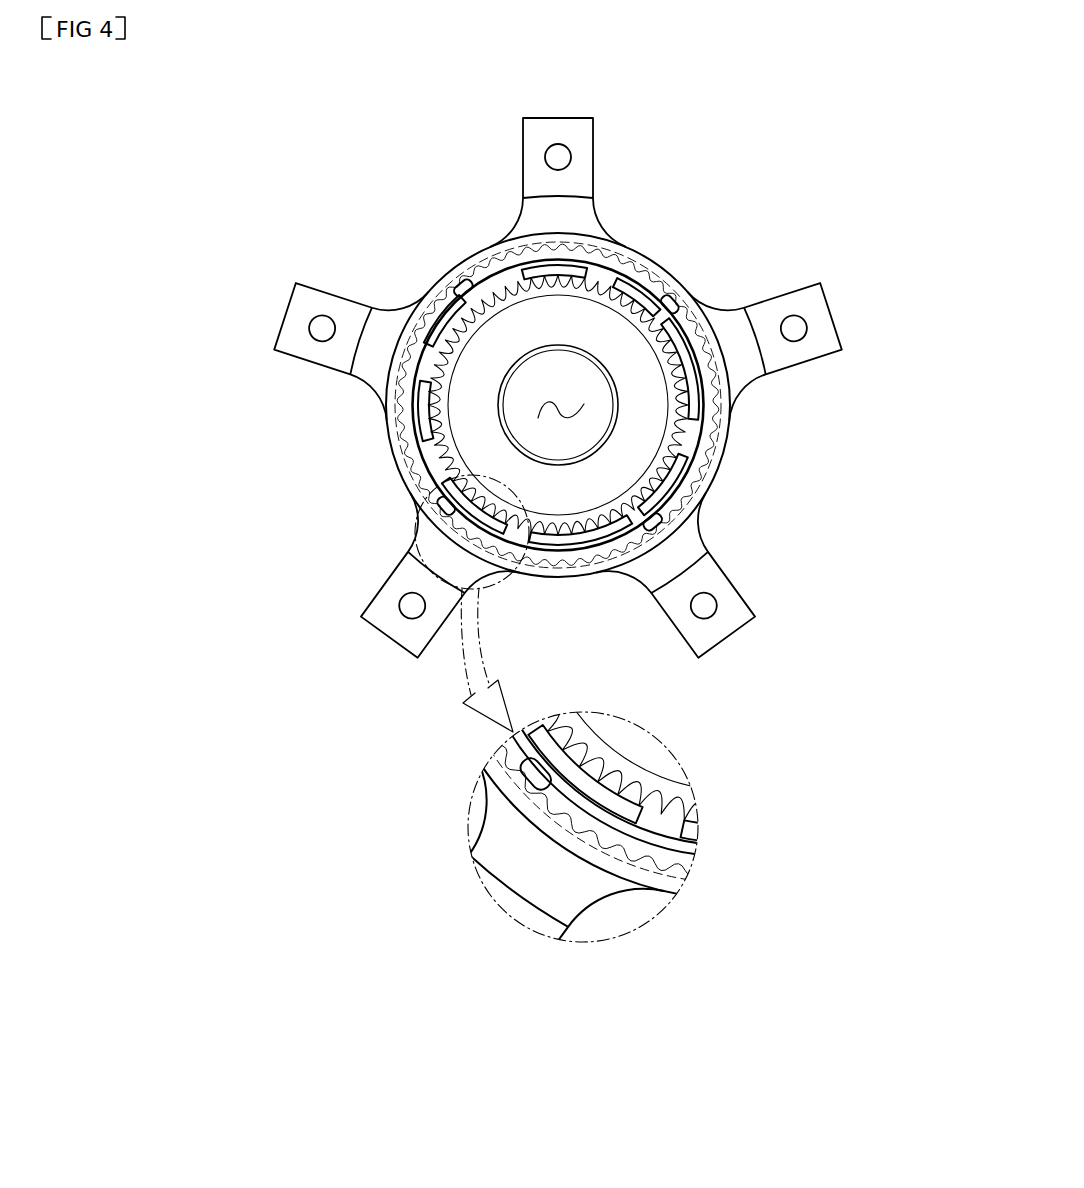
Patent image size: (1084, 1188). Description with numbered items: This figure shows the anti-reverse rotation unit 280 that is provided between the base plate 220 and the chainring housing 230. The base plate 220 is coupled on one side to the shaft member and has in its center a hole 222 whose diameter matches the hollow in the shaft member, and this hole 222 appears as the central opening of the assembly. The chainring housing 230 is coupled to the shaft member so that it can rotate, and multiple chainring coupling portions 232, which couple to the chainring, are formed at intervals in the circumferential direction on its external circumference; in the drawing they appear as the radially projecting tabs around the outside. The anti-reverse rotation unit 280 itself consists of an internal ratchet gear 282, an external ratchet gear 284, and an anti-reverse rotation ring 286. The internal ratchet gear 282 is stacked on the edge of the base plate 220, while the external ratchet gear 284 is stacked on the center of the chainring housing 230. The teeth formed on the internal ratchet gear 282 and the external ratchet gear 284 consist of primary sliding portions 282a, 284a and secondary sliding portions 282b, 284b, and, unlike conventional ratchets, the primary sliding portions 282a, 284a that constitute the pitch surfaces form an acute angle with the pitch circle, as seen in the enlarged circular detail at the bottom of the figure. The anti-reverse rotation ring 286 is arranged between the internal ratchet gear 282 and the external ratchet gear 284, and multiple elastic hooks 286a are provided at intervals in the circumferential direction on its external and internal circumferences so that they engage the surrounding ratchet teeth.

The base plate 220 is at (490, 455).
The chainring housing 230 is at (384, 485).
The hole 222 is at (562, 398).
The chainring coupling portion 232 is at (583, 145).
The anti-reverse rotation unit 280 is at (676, 406).
The internal ratchet gear 282 is at (728, 399).
The primary sliding portion 282a is at (662, 842).
The secondary sliding portion 282b is at (550, 822).
The external ratchet gear 284 is at (690, 458).
The primary sliding portion 284a is at (653, 860).
The secondary sliding portion 284b is at (595, 785).
The anti-reverse rotation ring 286 is at (690, 513).
The elastic hook 286a is at (533, 772).